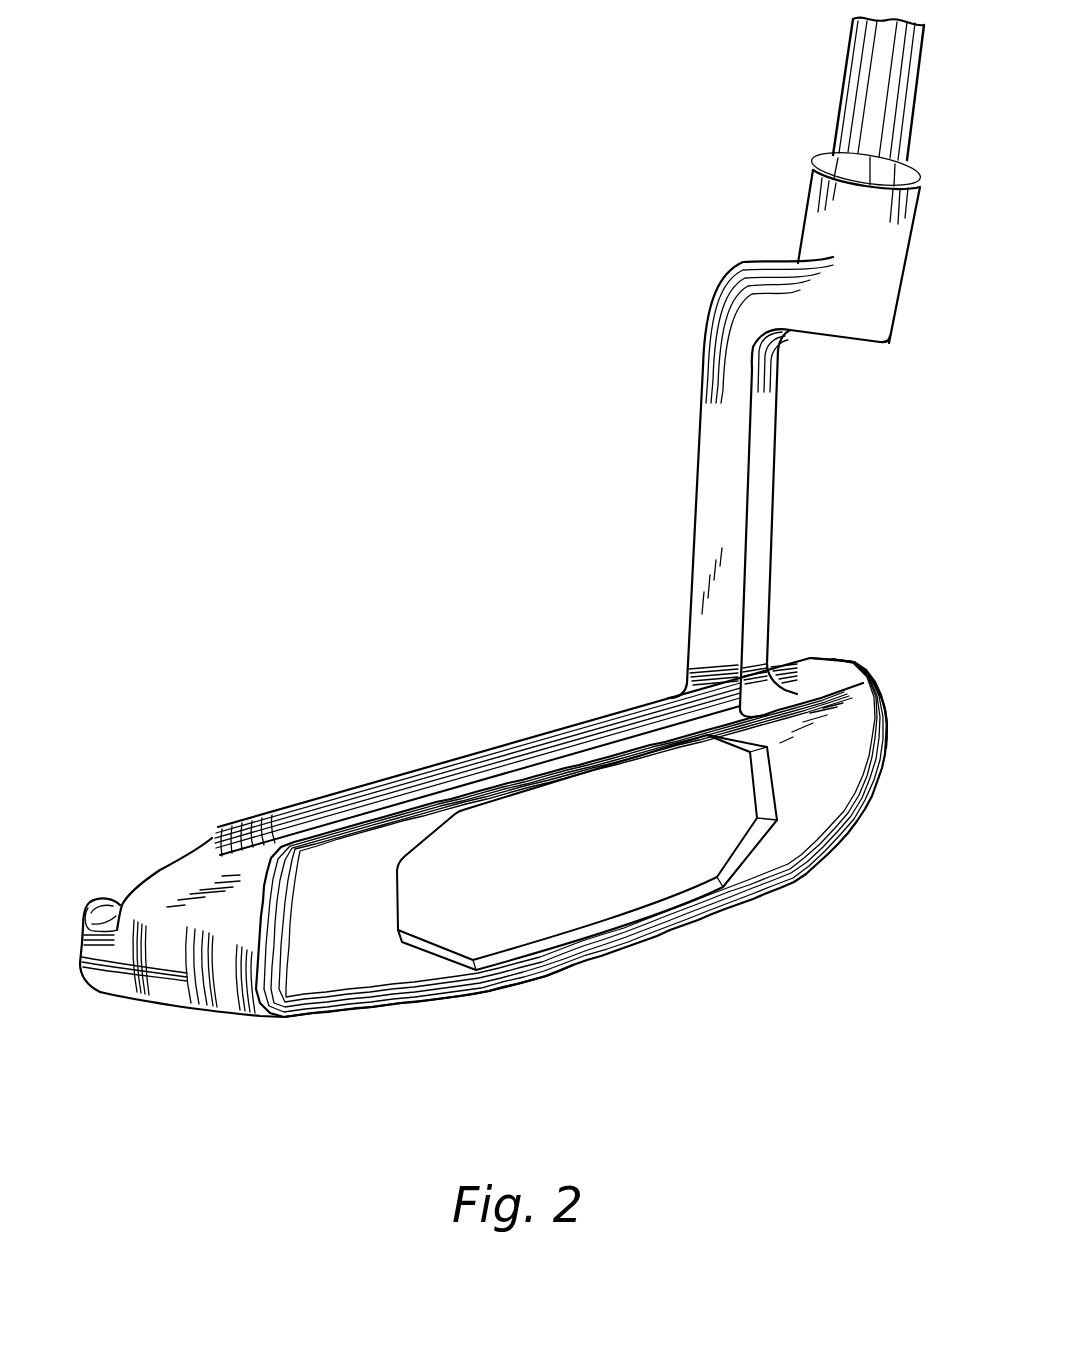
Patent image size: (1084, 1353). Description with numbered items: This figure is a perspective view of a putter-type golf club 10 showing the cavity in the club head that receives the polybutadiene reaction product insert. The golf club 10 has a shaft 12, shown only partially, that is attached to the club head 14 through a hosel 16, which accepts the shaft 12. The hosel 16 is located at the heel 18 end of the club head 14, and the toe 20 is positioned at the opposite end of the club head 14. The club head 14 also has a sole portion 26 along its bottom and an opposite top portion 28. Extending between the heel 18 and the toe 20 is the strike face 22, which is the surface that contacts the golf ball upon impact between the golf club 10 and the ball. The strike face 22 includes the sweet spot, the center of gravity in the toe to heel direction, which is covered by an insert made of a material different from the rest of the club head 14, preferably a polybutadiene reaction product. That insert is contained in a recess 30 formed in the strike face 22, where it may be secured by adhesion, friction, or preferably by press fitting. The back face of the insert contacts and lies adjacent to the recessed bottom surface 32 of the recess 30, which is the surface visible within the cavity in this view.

The golf club 10 is at (440, 477).
The shaft 12 is at (855, 82).
The club head 14 is at (433, 748).
The hosel 16 is at (888, 290).
The heel 18 is at (867, 740).
The toe 20 is at (163, 890).
The strike face 22 is at (787, 783).
The sole portion 26 is at (388, 1005).
The top portion 28 is at (537, 747).
The recess 30 is at (602, 880).
The recessed bottom surface 32 is at (627, 845).